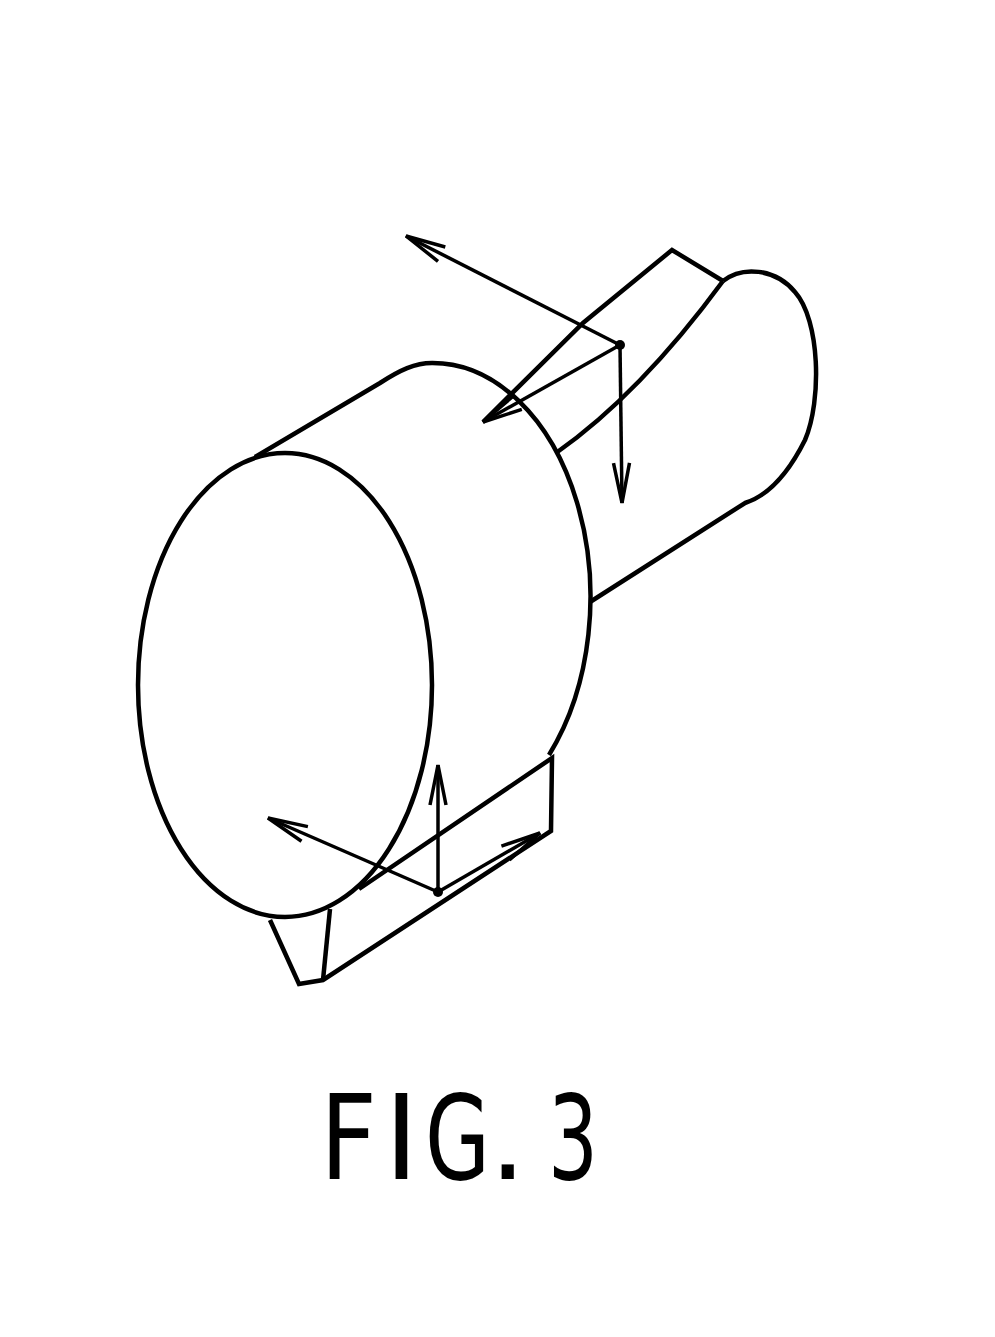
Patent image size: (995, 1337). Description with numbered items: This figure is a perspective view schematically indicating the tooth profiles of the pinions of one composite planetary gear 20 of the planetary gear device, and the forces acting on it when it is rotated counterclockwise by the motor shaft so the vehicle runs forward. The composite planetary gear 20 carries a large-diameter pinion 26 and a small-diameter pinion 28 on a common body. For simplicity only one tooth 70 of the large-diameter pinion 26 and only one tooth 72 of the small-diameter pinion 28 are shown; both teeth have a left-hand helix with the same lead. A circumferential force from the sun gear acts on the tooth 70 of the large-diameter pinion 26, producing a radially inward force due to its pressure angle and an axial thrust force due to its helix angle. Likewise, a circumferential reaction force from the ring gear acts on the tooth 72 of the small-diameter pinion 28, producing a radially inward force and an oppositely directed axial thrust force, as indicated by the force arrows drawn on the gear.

The composite planetary gear 20 is at (105, 155).
The large-diameter pinion 26 is at (323, 432).
The small-diameter pinion 28 is at (773, 428).
The tooth of the large-diameter pinion 70 is at (387, 920).
The tooth of the small-diameter pinion 72 is at (662, 293).